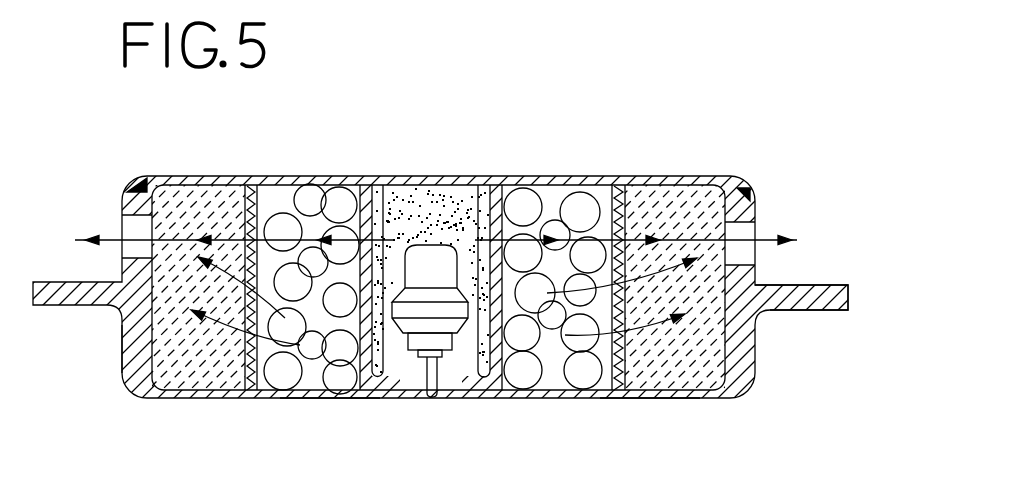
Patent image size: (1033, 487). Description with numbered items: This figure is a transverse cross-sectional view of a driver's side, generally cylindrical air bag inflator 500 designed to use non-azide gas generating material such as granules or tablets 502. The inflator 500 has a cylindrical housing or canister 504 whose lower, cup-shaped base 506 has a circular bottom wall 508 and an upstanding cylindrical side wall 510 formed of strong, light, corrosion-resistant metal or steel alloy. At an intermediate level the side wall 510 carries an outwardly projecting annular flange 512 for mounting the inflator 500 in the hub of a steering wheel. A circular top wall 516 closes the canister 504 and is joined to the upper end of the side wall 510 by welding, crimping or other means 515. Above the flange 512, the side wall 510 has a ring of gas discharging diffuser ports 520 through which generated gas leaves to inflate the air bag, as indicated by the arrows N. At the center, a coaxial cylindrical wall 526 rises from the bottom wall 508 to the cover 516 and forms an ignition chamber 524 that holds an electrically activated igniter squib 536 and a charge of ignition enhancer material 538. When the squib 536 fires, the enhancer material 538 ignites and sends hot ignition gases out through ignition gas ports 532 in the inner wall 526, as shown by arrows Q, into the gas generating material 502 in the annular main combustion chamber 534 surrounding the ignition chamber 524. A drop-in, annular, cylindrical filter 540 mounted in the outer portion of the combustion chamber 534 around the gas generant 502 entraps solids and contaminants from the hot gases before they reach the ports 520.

The air bag inflator 500 is at (737, 429).
The gas generating material 502 is at (340, 357).
The housing or canister 504 is at (771, 372).
The base 506 is at (643, 400).
The bottom wall 508 is at (332, 398).
The side wall 510 is at (142, 353).
The annular flange 512 is at (847, 293).
The welding, crimping or other means 515 is at (127, 188).
The top wall 516 is at (612, 180).
The diffuser ports 520 is at (137, 225).
The ignition chamber 524 is at (465, 327).
The cylindrical wall 526 is at (370, 300).
The ignition gas ports 532 is at (525, 232).
The main combustion chamber 534 is at (245, 380).
The igniter squib 536 is at (415, 322).
The ignition enhancer material 538 is at (460, 197).
The filter 540 is at (192, 361).
The arrows N is at (115, 241).
The arrows Q is at (333, 240).